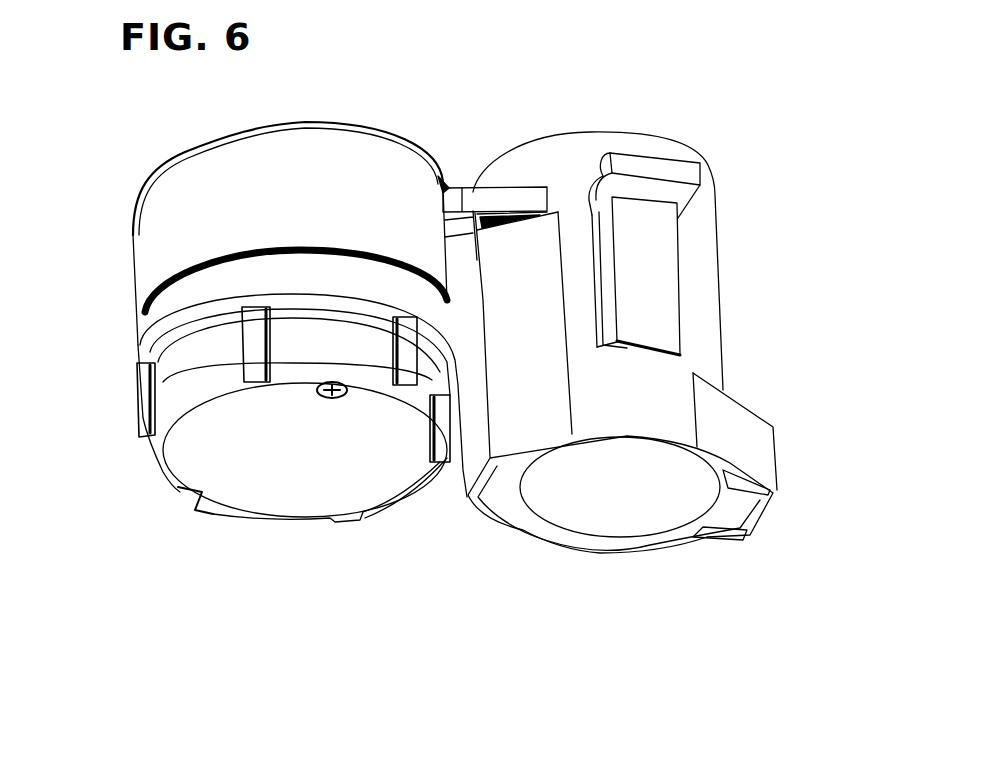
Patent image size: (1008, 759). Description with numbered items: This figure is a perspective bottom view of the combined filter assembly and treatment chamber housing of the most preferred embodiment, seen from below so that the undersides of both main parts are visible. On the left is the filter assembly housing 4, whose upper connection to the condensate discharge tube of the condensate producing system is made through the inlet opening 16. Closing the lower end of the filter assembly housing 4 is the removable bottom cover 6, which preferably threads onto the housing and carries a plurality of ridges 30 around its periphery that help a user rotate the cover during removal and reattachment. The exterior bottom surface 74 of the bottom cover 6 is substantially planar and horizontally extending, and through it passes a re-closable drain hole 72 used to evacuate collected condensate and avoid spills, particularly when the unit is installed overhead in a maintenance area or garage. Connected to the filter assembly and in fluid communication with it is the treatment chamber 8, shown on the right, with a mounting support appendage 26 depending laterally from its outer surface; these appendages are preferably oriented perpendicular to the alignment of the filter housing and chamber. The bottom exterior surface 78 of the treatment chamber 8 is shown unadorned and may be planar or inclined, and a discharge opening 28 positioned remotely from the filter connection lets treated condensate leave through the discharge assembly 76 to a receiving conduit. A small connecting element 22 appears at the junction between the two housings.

The filter assembly housing 4 is at (192, 226).
The bottom cover 6 is at (153, 330).
The treatment chamber 8 is at (713, 328).
The inlet opening 16 is at (155, 160).
The mounting bracket 22 is at (502, 203).
The mounting support appendages 26 is at (657, 243).
The discharge opening 28 is at (770, 512).
The ridges 30 is at (258, 332).
The drain hole 72 is at (332, 403).
The exterior bottom surface 74 is at (202, 467).
The discharge assembly 76 is at (748, 443).
The bottom exterior surface 78 is at (613, 497).